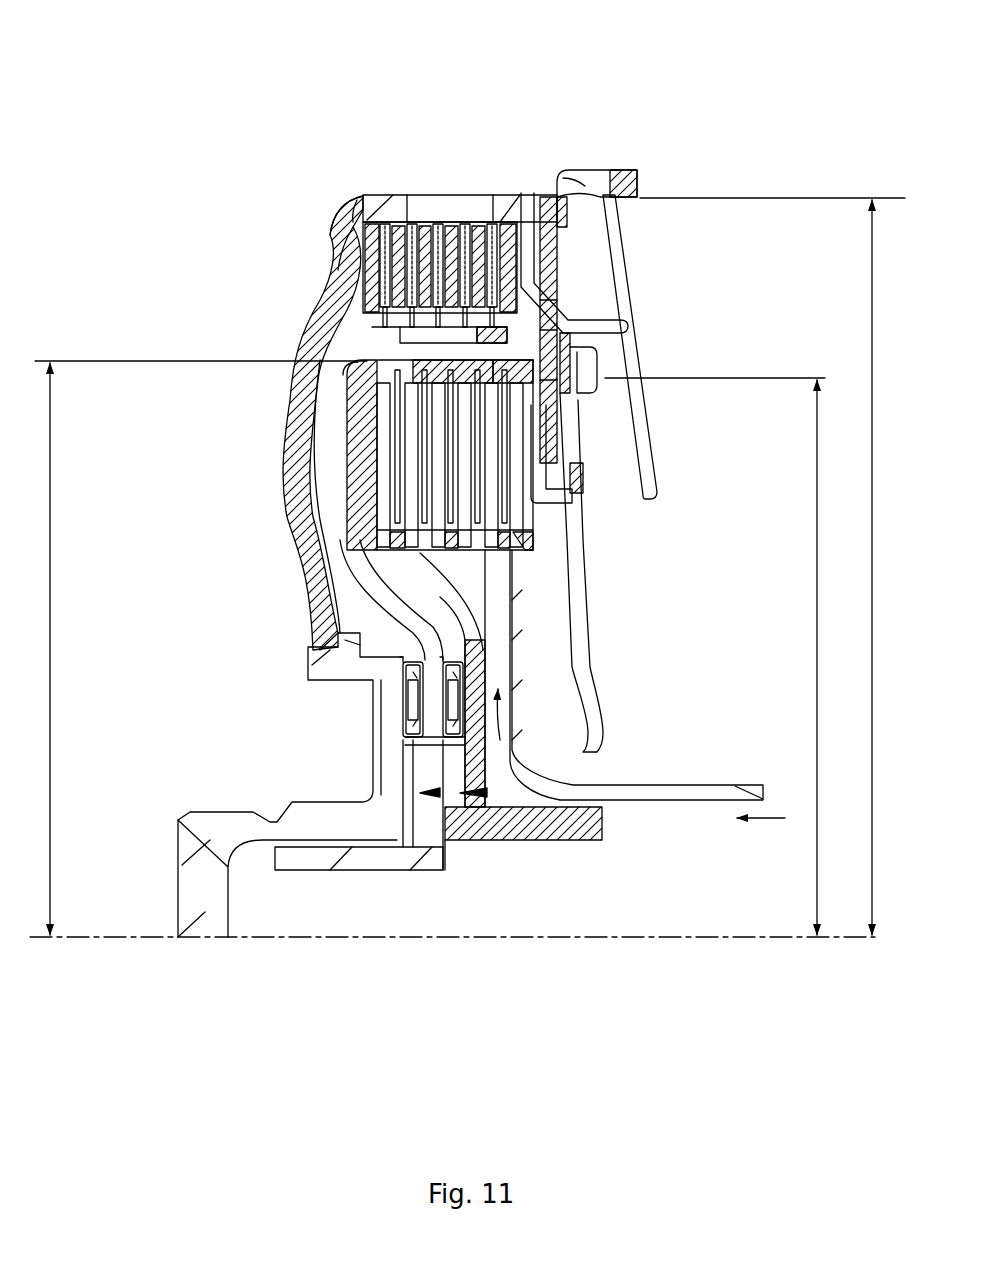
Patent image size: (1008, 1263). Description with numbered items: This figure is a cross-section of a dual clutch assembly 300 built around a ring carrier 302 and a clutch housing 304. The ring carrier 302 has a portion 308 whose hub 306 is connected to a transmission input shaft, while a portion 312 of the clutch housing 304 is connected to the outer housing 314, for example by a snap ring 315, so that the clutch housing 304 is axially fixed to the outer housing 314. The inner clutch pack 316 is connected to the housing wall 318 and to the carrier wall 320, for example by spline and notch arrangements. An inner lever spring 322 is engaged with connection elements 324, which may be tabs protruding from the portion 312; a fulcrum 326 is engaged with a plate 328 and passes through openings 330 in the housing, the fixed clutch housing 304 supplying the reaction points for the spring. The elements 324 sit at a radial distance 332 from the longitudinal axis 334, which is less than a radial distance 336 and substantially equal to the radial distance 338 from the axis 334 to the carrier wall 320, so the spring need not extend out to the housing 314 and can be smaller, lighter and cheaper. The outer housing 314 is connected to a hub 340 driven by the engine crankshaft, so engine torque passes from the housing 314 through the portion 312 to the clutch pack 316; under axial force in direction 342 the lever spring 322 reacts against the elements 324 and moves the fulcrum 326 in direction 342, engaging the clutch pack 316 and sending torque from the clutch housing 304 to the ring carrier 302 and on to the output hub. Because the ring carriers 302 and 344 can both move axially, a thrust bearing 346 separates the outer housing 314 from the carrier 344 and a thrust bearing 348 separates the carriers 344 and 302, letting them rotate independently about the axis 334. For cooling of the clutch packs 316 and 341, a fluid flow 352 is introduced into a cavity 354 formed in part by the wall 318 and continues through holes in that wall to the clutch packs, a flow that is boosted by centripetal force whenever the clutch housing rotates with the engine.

The dual clutch assembly 300 is at (213, 130).
The ring carrier 302 is at (355, 476).
The clutch housing 304 is at (553, 549).
The hub 306 is at (523, 840).
The portion 308 is at (375, 568).
The portion 312 is at (550, 257).
The outer housing 314 is at (358, 197).
The snap ring 315 is at (563, 193).
The inner clutch pack 316 is at (479, 599).
The housing wall 318 is at (459, 553).
The carrier wall 320 is at (383, 333).
The inner lever spring 322 is at (583, 535).
The connection elements 324 is at (583, 362).
The fulcrum 326 is at (563, 507).
The plate 328 is at (520, 404).
The openings 330 is at (555, 480).
The radial distance 332 is at (817, 648).
The longitudinal axis 334 is at (617, 940).
The radial distance 336 is at (872, 330).
The radial distance 338 is at (52, 640).
The hub 340 is at (213, 825).
The clutch pack 341 is at (446, 200).
The direction 342 is at (782, 822).
The ring carrier 344 is at (378, 362).
The thrust bearing 346 is at (413, 740).
The thrust bearing 348 is at (455, 740).
The fluid flow 352 is at (512, 778).
The cavity 354 is at (375, 569).